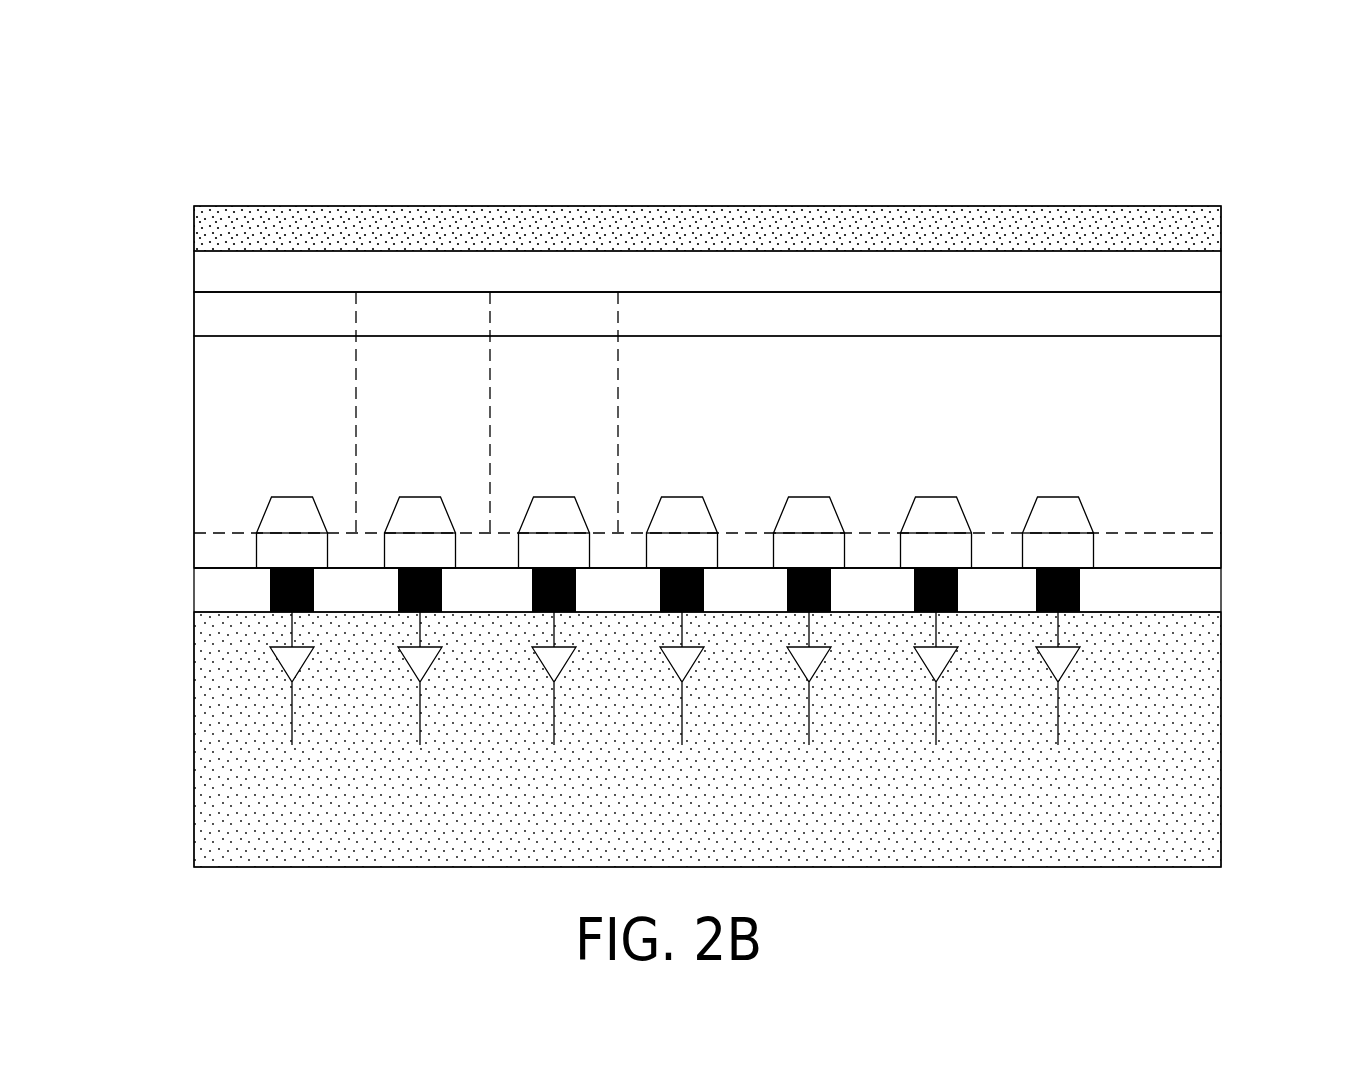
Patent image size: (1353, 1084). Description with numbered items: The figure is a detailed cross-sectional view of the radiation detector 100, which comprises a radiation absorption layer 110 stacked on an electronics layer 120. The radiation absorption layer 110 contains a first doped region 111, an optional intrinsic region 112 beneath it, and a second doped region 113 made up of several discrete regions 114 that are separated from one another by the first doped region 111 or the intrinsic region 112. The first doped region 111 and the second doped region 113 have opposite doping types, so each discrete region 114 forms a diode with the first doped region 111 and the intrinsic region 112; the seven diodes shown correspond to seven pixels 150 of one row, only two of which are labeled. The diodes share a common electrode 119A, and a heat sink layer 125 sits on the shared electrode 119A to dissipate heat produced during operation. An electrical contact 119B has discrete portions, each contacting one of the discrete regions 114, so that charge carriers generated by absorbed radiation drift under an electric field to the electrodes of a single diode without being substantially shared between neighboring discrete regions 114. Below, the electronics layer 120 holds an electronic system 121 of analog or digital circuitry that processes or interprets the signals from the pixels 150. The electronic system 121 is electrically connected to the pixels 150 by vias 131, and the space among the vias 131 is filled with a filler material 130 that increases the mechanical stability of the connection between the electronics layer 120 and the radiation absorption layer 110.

The radiation detector 100 is at (143, 165).
The heat sink layer 125 is at (1167, 242).
The electrode 119A is at (1180, 285).
The first doped region 111 is at (1163, 327).
The intrinsic region 112 is at (1167, 383).
The radiation absorption layer 110 is at (180, 293).
The pixel 150 is at (440, 420).
The second doped region 113 is at (1227, 498).
The discrete region 114 is at (274, 529).
The electrical contact 119B is at (266, 565).
The filler material 130 is at (1242, 595).
The via 131 is at (252, 599).
The electronics layer 120 is at (172, 612).
The electronic system 121 is at (1088, 688).